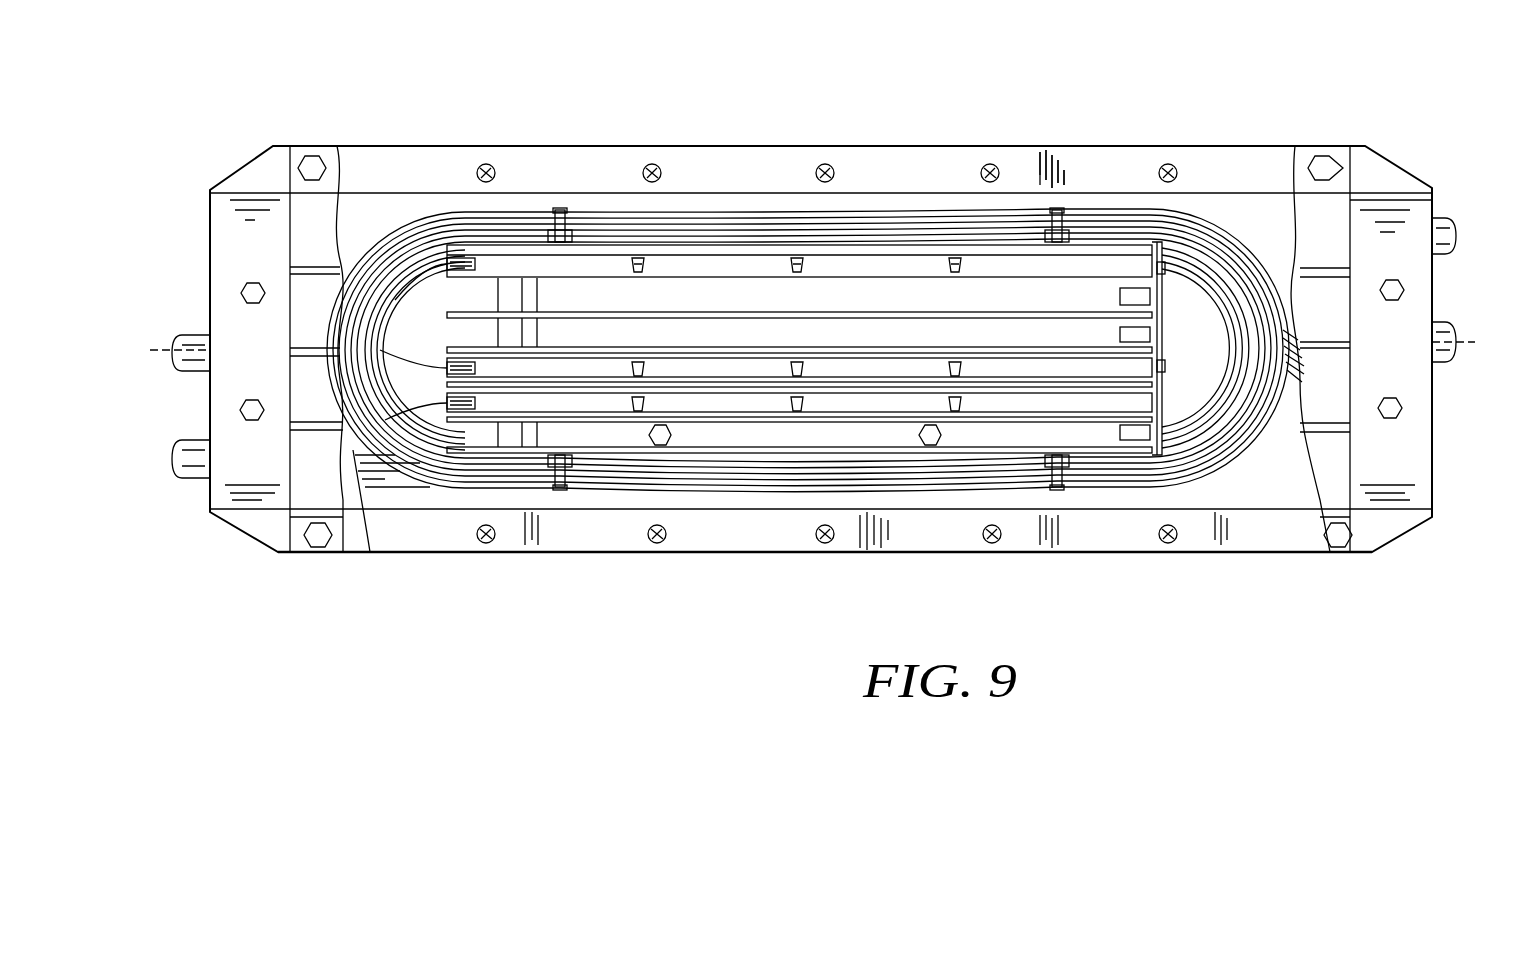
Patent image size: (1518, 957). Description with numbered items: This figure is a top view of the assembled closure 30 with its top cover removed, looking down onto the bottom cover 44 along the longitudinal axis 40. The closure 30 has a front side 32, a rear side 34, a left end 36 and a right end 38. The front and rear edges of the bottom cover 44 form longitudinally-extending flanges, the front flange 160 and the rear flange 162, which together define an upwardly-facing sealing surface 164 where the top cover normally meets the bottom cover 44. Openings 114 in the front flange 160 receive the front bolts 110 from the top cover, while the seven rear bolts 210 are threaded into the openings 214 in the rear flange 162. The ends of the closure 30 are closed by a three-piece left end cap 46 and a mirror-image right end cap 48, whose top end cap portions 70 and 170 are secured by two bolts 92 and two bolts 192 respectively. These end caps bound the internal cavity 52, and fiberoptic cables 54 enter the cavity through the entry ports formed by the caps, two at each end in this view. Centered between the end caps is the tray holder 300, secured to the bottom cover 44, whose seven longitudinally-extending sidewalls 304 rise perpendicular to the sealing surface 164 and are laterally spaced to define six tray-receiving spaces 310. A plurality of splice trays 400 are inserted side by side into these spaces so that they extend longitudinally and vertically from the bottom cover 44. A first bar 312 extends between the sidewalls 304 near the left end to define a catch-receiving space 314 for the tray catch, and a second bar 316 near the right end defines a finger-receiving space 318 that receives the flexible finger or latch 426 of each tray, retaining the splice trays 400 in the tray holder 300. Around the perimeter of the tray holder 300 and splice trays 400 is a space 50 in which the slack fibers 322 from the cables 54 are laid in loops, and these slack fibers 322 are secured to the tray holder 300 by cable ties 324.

The closure 30 is at (890, 80).
The front side 32 is at (790, 600).
The rear side 34 is at (705, 100).
The left end 36 is at (200, 278).
The right end 38 is at (1432, 530).
The longitudinal axis 40 is at (160, 348).
The bottom cover 44 is at (855, 560).
The left end plate or cap 46 is at (240, 572).
The right end plate or cap 48 is at (1408, 160).
The space 50 is at (1210, 205).
The internal cavity 52 is at (1245, 490).
The fiberoptic cables 54 is at (1438, 225).
The top end cap portion 70 is at (230, 235).
The bolts 92 is at (253, 305).
The bolt 110 is at (322, 547).
The openings 114 is at (488, 543).
The front flange 160 is at (928, 540).
The rear flange 162 is at (878, 160).
The upwardly-facing sealing surface 164 is at (1125, 160).
The top end cap portion 170 is at (1395, 485).
The bolts 192 is at (1392, 280).
The bolts 210 is at (312, 160).
The openings 214 is at (486, 164).
The tray holder 300 is at (1165, 318).
The sidewalls 304 is at (690, 312).
The tray-receiving spaces 310 is at (920, 300).
The first member or bar 312 is at (520, 296).
The catch-receiving space 314 is at (525, 328).
The second member or bar 316 is at (1160, 400).
The finger-receiving space 318 is at (1130, 433).
The slack fibers 322 is at (690, 215).
The cable ties 324 is at (560, 208).
The splice trays 400 is at (760, 262).
The flexible finger or latch 426 is at (1165, 270).